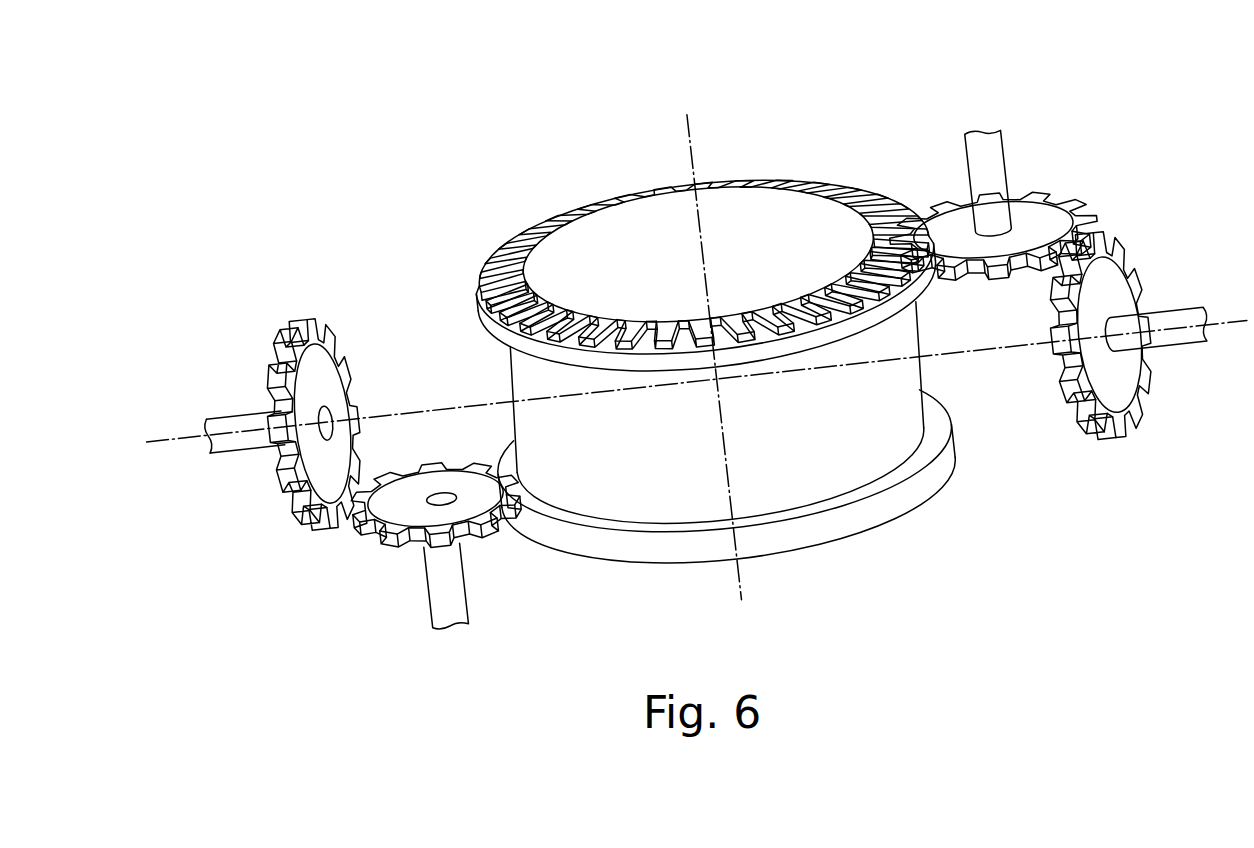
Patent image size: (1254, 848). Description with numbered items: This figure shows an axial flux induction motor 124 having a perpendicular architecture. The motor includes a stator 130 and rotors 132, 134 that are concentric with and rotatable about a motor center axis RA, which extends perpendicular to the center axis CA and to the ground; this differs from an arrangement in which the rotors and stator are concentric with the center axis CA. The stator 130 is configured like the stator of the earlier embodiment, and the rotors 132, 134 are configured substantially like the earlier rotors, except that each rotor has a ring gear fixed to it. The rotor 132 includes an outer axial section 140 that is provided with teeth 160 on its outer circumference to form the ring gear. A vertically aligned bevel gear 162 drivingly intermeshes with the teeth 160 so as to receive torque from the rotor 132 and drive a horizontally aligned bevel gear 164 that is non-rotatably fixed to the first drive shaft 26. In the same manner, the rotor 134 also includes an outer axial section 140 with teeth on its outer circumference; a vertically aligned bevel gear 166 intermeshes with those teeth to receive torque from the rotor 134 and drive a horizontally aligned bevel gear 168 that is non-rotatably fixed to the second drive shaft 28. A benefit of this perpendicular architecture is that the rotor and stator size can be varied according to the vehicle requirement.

The first drive shaft 26 is at (1167, 317).
The second drive shaft 28 is at (218, 430).
The axial flux induction motor 124 is at (684, 218).
The stator 130 is at (830, 443).
The rotor 132 is at (662, 268).
The rotor 134 is at (696, 558).
The outer axial section 140 is at (577, 248).
The teeth 160 is at (744, 308).
The vertically aligned bevel gear 162 is at (1028, 220).
The horizontally aligned bevel gear 164 is at (1121, 388).
The vertically aligned bevel gear 166 is at (407, 507).
The horizontally aligned bevel gear 168 is at (328, 478).
The center axis CA is at (165, 446).
The motor center axis RA is at (687, 157).